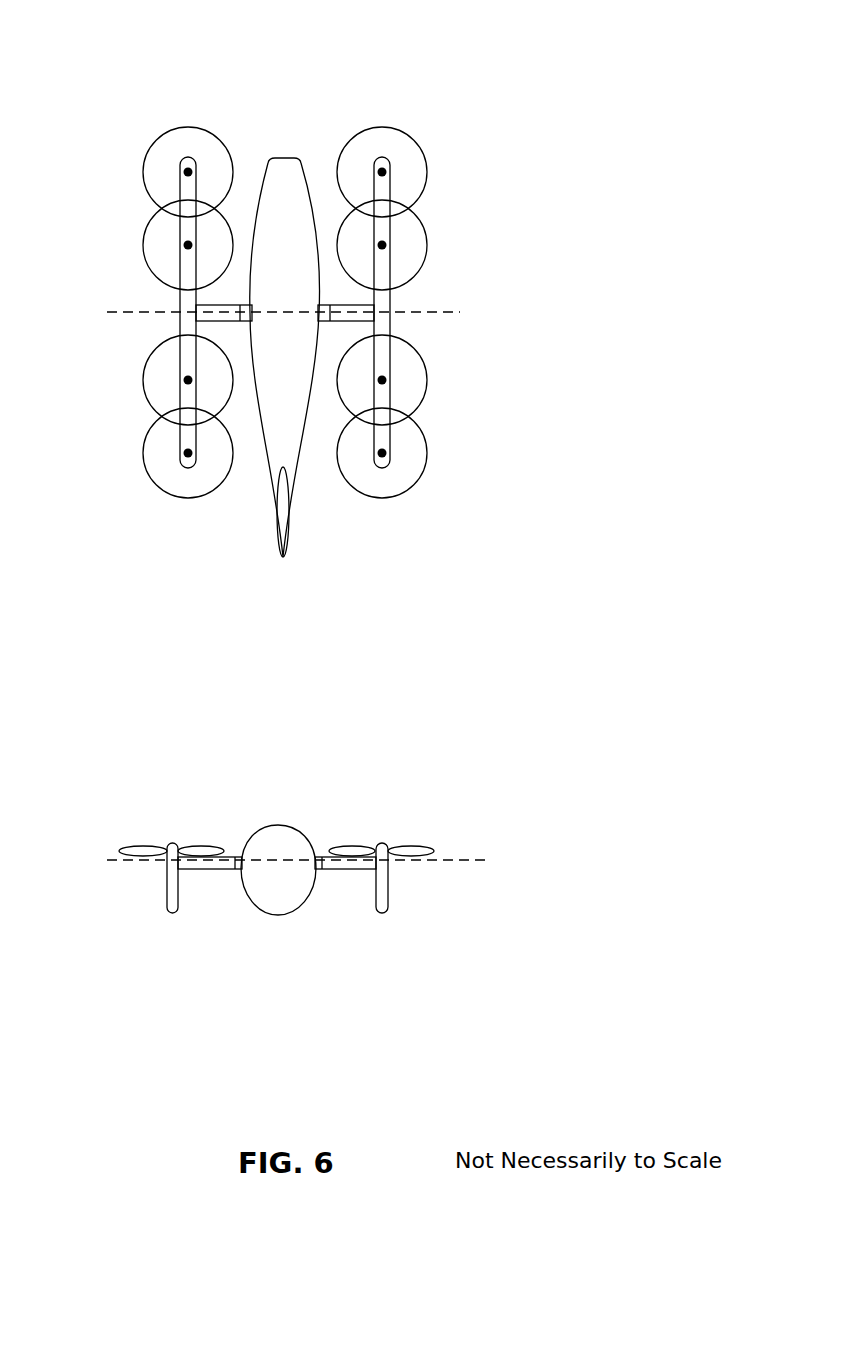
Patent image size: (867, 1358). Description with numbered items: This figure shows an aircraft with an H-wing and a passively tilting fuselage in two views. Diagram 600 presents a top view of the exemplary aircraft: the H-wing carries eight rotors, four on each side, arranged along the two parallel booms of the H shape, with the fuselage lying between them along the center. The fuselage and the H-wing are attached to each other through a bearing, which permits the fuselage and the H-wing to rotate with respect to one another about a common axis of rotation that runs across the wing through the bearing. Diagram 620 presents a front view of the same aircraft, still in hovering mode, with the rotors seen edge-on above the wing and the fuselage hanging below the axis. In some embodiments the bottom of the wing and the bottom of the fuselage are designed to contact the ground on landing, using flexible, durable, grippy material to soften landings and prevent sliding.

The diagram 600 is at (433, 36).
The diagram 620 is at (448, 751).